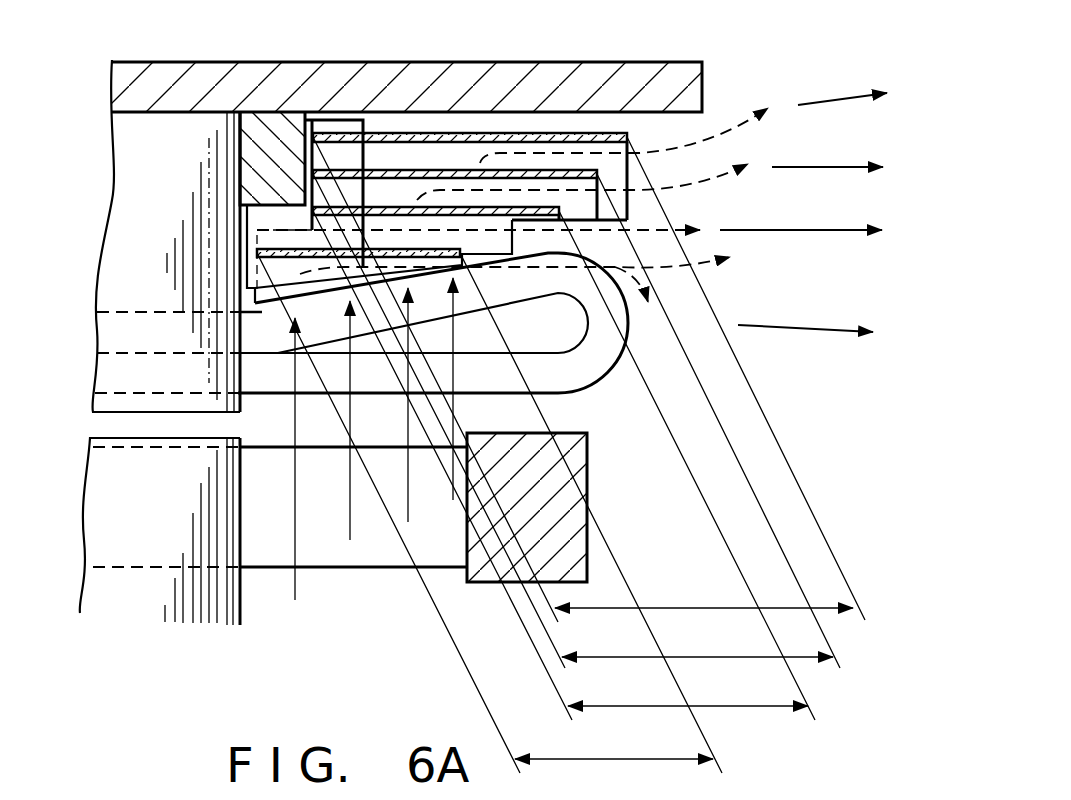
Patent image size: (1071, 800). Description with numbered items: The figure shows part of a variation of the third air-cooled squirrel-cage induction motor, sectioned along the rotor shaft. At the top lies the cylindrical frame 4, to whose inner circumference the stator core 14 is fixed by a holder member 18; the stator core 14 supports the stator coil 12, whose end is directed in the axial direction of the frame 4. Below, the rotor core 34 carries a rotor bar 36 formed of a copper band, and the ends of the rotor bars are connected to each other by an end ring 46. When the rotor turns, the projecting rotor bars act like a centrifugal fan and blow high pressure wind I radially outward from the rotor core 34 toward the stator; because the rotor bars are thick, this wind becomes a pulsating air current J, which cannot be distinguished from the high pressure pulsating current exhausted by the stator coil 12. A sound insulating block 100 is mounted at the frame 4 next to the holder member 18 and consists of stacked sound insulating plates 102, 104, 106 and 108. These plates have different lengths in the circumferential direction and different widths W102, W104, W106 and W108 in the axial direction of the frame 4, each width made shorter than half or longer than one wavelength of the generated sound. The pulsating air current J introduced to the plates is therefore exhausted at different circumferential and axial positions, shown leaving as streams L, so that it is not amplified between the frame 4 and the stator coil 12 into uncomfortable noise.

The motor housing or frame 4 is at (372, 93).
The holder member 18 is at (262, 128).
The sound insulating block 100 is at (324, 126).
The sound insulating plate 102 is at (322, 262).
The sound insulating plate 104 is at (557, 217).
The sound insulating plate 106 is at (548, 168).
The sound insulating plate 108 is at (483, 134).
The stator coil 12 is at (607, 357).
The stator core 14 is at (131, 187).
The rotor core 34 is at (107, 578).
The rotor bar 36 is at (363, 557).
The short-circuit or end ring 46 is at (587, 463).
The high pressure wind I is at (455, 338).
The outgoing flow arrows L is at (823, 104).
The pulsating air current J is at (692, 138).
The width of sound insulating plate 108 W108 is at (589, 379).
The width of sound insulating plate 106 W106 is at (576, 421).
The width of sound insulating plate 104 W104 is at (564, 465).
The width of sound insulating plate 102 W102 is at (489, 513).